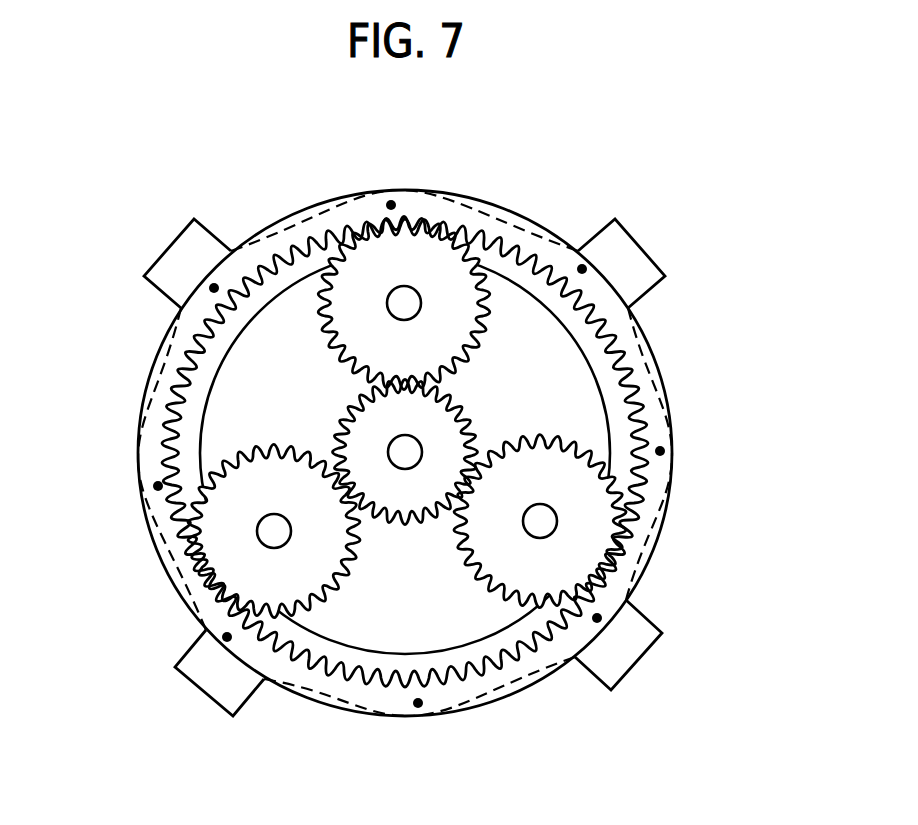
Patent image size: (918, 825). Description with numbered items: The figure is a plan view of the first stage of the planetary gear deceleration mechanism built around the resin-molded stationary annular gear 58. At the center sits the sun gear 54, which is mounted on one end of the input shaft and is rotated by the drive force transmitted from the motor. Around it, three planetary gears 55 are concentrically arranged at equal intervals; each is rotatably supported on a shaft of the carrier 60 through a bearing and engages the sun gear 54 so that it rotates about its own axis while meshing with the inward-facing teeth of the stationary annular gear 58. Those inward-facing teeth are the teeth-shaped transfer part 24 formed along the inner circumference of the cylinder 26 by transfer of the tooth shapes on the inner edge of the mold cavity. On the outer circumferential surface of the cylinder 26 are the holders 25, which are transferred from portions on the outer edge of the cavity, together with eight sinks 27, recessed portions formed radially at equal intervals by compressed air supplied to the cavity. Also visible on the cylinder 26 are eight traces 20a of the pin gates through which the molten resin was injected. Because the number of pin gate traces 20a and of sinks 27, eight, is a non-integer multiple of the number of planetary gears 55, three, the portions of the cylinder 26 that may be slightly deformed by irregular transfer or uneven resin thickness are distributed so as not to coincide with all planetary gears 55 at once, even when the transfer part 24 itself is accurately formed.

The stationary annular gear 58 is at (434, 403).
The cylinder 26 is at (626, 330).
The sinks 27 is at (303, 220).
The holders 25 is at (164, 246).
The trace of the pin gate 20a is at (391, 205).
The transfer part 24 is at (237, 305).
The carrier 60 is at (453, 652).
The sun gear 54 is at (466, 413).
The planetary gears 55 is at (487, 318).